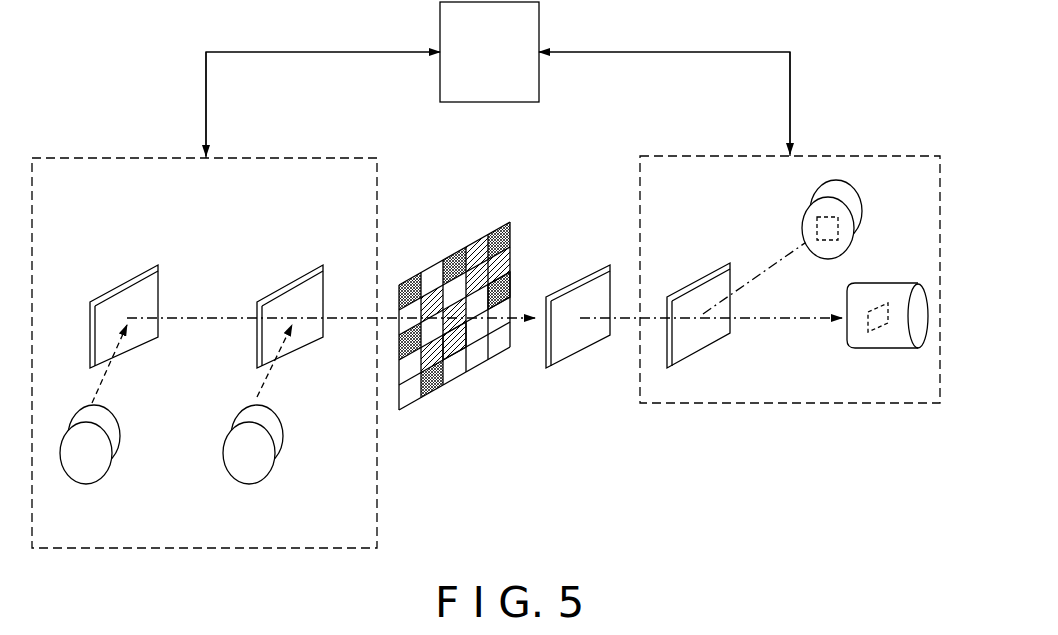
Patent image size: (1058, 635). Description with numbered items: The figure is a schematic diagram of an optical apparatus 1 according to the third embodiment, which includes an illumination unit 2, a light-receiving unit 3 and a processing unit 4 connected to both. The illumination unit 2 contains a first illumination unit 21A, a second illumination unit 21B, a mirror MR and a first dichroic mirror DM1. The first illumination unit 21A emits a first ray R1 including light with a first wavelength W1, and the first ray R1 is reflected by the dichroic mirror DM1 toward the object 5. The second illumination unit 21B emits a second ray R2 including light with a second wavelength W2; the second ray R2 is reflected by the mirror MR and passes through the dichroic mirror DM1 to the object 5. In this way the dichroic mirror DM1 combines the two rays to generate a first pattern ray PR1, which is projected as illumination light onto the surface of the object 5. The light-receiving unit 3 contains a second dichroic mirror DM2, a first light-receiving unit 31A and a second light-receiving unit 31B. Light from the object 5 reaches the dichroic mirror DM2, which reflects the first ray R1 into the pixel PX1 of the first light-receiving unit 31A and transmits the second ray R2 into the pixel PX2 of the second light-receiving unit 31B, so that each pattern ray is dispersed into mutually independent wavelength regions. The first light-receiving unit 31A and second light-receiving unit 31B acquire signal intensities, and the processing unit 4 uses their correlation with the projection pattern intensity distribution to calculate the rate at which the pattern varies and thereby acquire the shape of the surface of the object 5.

The optical apparatus 1 is at (812, 516).
The illumination unit 2 is at (342, 157).
The light-receiving unit 3 is at (903, 153).
The processing unit 4 is at (539, 13).
The object 5 is at (597, 267).
The mirror MR is at (145, 267).
The first dichroic mirror DM1 is at (305, 267).
The second dichroic mirror DM2 is at (715, 263).
The first pattern ray PR1 is at (472, 211).
The first wavelength W1 is at (460, 368).
The second wavelength W2 is at (503, 331).
The first ray R1 is at (265, 377).
The second ray R2 is at (107, 377).
The first illumination unit 21A is at (270, 463).
The second illumination unit 21B is at (112, 463).
The first light-receiving unit 31A is at (857, 202).
The second light-receiving unit 31B is at (897, 283).
The pixel PX1 is at (823, 250).
The pixel PX2 is at (883, 328).